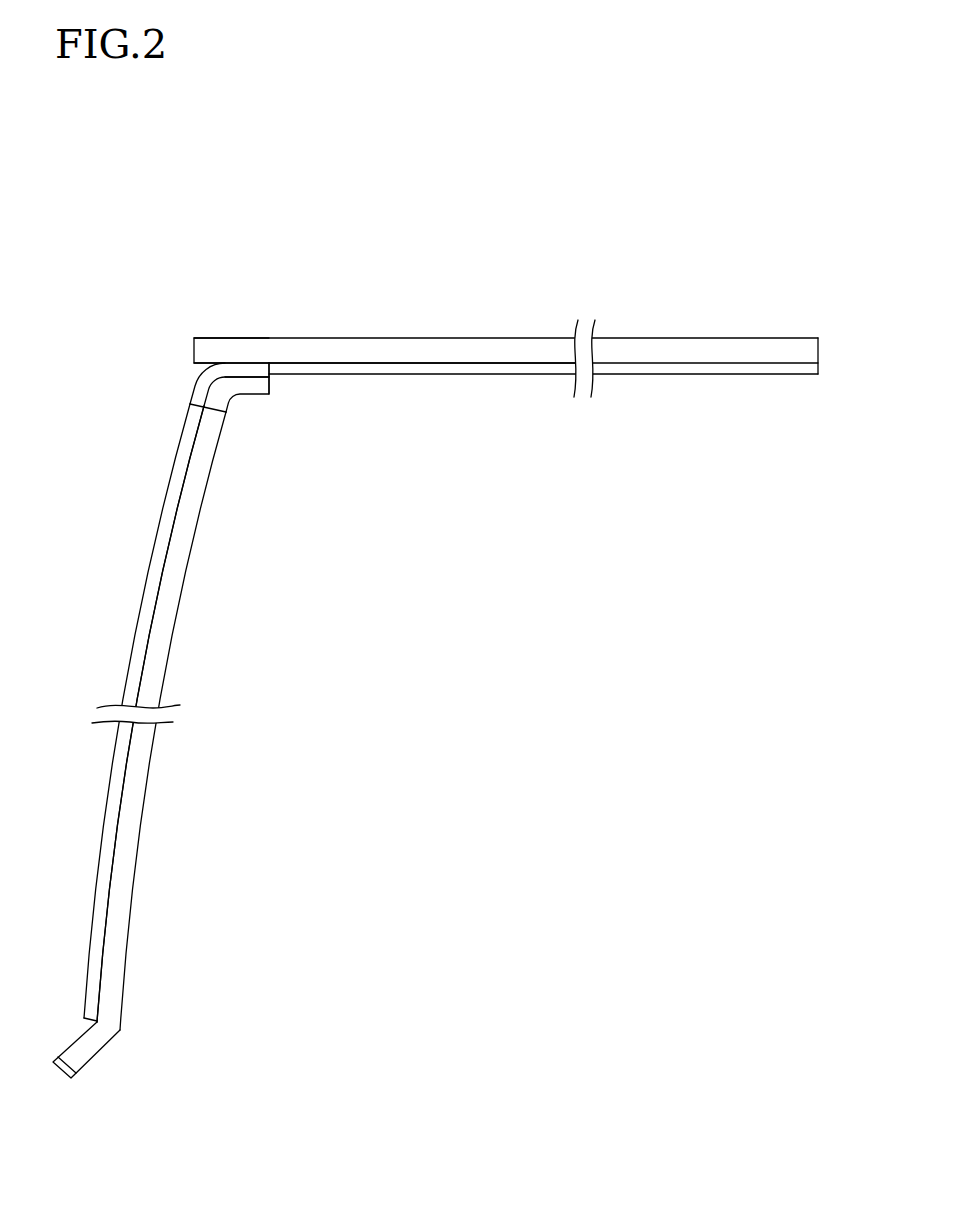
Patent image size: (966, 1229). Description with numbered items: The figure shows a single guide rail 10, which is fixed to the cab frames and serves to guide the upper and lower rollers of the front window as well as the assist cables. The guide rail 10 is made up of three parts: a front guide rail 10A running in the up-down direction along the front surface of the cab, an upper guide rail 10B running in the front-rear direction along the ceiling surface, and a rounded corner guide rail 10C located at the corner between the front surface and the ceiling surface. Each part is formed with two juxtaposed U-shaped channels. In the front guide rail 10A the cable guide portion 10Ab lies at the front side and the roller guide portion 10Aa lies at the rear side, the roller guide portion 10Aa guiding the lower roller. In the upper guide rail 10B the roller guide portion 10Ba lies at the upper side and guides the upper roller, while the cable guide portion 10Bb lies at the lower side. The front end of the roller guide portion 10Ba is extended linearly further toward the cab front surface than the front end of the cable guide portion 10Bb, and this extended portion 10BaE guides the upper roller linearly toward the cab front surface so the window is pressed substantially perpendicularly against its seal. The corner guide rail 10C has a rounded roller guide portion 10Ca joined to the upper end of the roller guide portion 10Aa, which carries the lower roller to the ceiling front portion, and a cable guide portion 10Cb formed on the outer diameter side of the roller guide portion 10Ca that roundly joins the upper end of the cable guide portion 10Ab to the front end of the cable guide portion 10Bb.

The guide rail 10 is at (421, 646).
The front guide rail 10A is at (162, 741).
The roller guide portion 10Aa is at (165, 595).
The cable guide portion 10Ab is at (138, 632).
The upper guide rail 10B is at (506, 354).
The roller guide portion 10Ba is at (506, 309).
The extended portion 10BaE is at (215, 350).
The cable guide portion 10Bb is at (455, 370).
The corner guide rail 10C is at (214, 443).
The roller guide portion 10Ca is at (256, 385).
The cable guide portion 10Cb is at (205, 386).